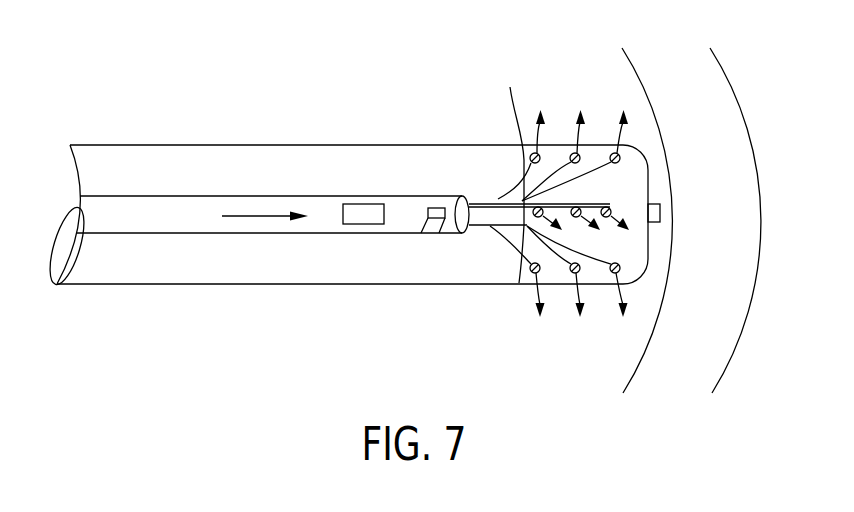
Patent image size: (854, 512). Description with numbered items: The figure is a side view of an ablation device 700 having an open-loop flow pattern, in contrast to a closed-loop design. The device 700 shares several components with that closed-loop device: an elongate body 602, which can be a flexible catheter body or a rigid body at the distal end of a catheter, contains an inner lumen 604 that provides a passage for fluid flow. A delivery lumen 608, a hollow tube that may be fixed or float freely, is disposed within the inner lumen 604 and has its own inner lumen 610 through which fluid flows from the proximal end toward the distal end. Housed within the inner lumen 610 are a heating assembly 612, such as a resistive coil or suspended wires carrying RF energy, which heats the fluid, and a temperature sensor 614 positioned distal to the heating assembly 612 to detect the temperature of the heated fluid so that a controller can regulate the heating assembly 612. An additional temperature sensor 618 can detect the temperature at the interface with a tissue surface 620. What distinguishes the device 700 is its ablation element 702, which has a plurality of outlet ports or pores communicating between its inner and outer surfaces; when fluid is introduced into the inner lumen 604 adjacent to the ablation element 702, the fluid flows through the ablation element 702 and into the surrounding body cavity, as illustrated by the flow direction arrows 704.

The ablation device 700 is at (164, 80).
The elongate body 602 is at (181, 146).
The inner lumen 604 is at (92, 255).
The delivery lumen 608 is at (256, 196).
The inner lumen of the delivery lumen 610 is at (92, 218).
The heating assembly 612 is at (360, 225).
The temperature sensor 614 is at (437, 208).
The temperature sensor 618 is at (662, 210).
The tissue surface 620 is at (735, 279).
The ablation element 702 is at (510, 171).
The flow direction arrows 704 is at (620, 287).